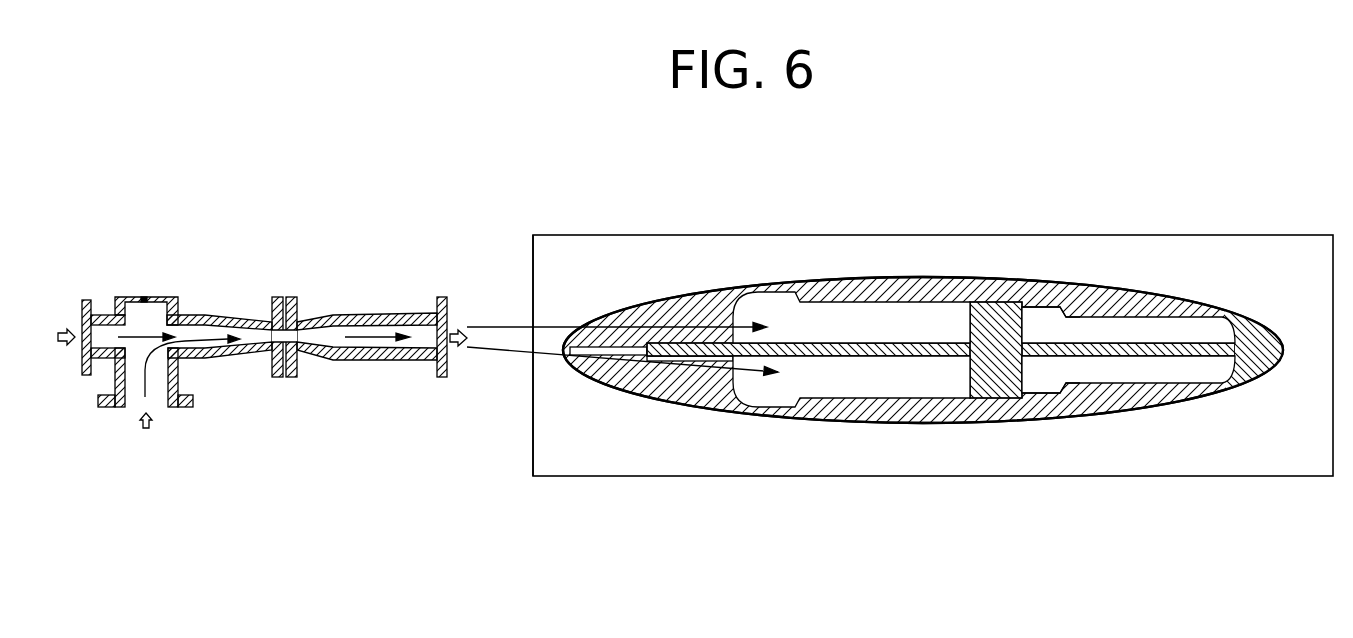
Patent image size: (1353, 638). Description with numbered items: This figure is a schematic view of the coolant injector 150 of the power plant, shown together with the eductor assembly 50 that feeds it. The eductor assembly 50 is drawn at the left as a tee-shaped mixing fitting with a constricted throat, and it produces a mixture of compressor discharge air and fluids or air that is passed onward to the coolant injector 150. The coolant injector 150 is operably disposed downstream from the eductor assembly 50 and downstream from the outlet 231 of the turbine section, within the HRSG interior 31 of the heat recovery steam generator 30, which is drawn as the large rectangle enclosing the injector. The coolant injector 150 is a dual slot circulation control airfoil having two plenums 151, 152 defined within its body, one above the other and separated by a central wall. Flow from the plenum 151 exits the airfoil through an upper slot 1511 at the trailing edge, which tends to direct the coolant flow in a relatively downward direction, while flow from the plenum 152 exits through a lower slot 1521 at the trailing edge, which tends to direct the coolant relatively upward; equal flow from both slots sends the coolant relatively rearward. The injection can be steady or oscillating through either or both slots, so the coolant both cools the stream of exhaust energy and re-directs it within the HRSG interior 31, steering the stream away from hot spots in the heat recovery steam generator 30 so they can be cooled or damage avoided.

The heat recovery steam generator 30 is at (913, 490).
The HRSG interior 31 is at (1289, 276).
The eductor assembly 50 is at (129, 434).
The coolant injector 150 is at (1203, 398).
The plenum 151 is at (892, 332).
The plenum 152 is at (902, 391).
The outlet 231 is at (521, 417).
The upper slot 1511 is at (1052, 310).
The lower slot 1521 is at (1090, 367).